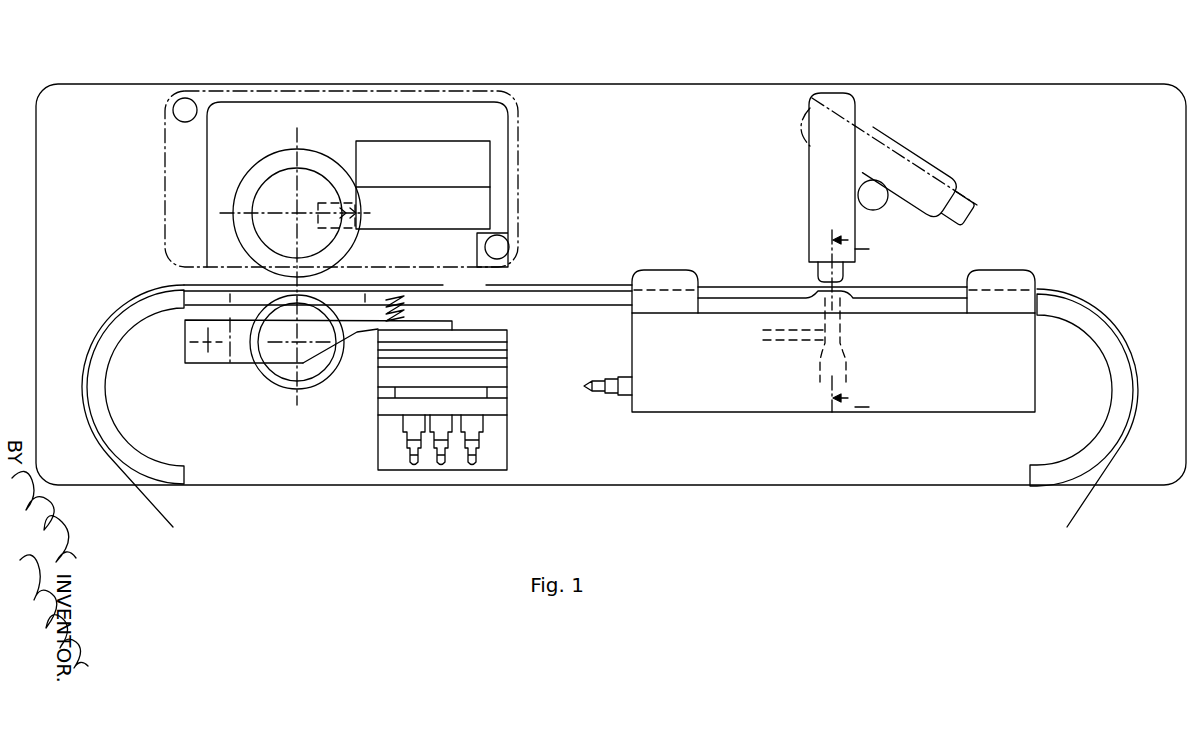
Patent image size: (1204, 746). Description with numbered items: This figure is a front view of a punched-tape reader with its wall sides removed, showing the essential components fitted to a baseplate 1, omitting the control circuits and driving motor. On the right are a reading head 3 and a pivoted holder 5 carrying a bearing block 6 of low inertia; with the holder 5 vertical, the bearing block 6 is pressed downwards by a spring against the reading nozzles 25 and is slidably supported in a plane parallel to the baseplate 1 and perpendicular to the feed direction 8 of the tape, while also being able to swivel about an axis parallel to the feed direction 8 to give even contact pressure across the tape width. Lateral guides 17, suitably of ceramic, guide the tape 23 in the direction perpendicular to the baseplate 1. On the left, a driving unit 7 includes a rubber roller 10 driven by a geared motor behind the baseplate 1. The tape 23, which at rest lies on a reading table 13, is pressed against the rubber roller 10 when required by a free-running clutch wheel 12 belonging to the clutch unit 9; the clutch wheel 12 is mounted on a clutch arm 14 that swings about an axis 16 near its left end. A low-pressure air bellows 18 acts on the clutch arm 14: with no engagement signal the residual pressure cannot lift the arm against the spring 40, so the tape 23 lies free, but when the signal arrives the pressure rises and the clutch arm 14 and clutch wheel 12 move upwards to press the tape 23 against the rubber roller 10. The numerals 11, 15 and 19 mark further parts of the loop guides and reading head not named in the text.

The baseplate 1 is at (1140, 242).
The reading head 3 is at (761, 430).
The pivoted holder 5 is at (792, 172).
The bearing block 6 is at (965, 209).
The driving unit 7 is at (300, 126).
The feed direction 8 is at (722, 260).
The clutch unit 9 is at (250, 374).
The rubber roller 10 is at (245, 202).
The right film guide loop 11 is at (1122, 393).
The clutch wheel 12 is at (292, 388).
The reading table 13 is at (578, 300).
The clutch arm 14 is at (312, 345).
The left film guide loop 15 is at (112, 340).
The axis 16 is at (208, 345).
The lateral guides 17 is at (655, 283).
The bellows 18 is at (508, 362).
The nozzle 19 is at (600, 394).
The tape 23 is at (1076, 520).
The reading nozzles 25 is at (830, 307).
The spring 40 is at (403, 311).